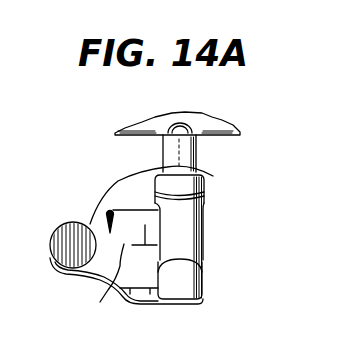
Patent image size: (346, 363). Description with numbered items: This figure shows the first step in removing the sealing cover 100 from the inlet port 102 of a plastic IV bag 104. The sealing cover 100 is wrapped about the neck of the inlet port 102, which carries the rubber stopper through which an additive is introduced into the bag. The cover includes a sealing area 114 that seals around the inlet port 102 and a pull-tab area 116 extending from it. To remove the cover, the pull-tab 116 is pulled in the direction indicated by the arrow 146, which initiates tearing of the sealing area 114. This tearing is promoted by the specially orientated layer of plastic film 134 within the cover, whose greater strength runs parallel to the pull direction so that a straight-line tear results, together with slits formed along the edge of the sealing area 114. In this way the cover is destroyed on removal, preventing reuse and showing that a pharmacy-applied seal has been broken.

The sealing cover 100 is at (226, 243).
The inlet port 102 is at (162, 148).
The plastic IV bag 104 is at (147, 118).
The sealing area 114 is at (192, 328).
The pull-tab area 116 is at (56, 305).
The orientated plastic film 134 is at (110, 286).
The arrow 146 is at (110, 212).